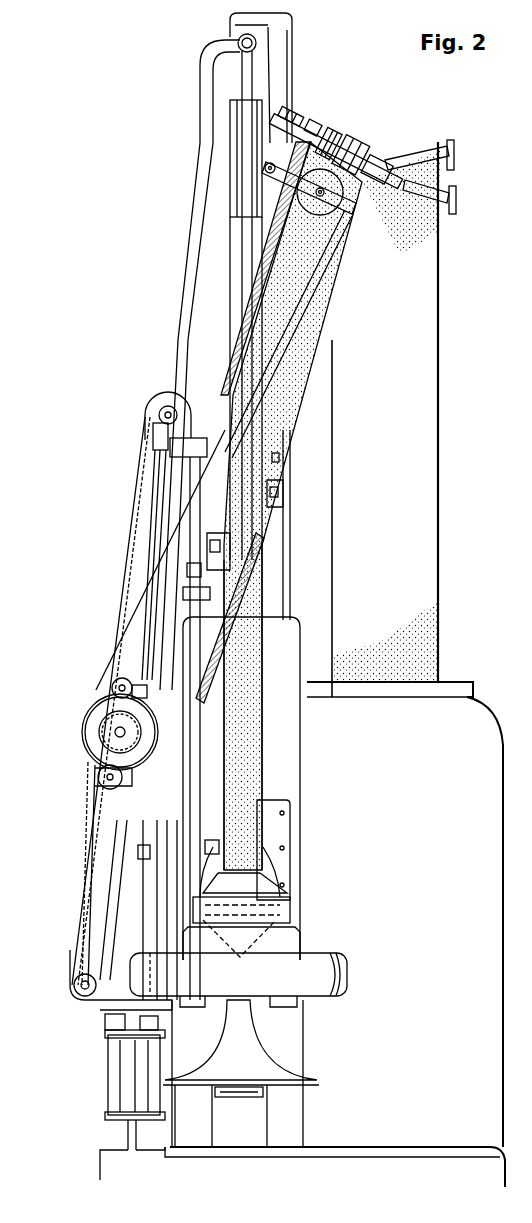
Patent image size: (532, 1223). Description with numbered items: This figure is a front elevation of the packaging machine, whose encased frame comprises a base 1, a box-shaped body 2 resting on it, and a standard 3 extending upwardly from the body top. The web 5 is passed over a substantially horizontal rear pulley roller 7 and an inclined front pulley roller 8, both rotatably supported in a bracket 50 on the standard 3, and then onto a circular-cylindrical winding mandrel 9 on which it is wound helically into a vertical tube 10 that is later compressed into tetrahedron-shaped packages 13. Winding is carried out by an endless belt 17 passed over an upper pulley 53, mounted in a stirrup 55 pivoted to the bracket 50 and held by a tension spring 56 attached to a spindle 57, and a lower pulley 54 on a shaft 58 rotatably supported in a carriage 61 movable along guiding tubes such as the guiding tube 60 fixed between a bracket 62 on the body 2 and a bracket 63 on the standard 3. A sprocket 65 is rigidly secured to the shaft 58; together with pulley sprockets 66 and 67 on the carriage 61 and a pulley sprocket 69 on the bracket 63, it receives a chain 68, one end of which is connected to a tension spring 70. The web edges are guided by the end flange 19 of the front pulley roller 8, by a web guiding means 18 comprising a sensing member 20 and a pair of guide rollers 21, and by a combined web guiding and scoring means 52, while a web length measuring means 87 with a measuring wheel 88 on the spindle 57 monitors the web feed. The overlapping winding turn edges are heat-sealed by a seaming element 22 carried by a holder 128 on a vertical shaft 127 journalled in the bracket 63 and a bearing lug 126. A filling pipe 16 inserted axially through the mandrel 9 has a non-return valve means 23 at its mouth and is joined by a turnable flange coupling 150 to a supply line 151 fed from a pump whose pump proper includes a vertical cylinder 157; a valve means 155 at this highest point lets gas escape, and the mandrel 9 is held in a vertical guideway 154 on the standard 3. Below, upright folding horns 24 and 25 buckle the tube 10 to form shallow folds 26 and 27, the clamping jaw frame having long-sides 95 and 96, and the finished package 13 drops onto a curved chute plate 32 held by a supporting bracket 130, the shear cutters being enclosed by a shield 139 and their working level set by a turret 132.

The base 1 is at (488, 1168).
The box-shaped body 2 is at (492, 742).
The standard 3 is at (282, 52).
The web 5 is at (386, 419).
The rear pulley roller 7 is at (452, 160).
The front pulley roller 8 is at (450, 197).
The winding mandrel 9 is at (236, 238).
The tube 10 is at (263, 643).
The package 13 is at (302, 920).
The filling pipe 16 is at (222, 60).
The endless belt 17 is at (298, 316).
The web guiding means 18 is at (282, 468).
The end flange 19 is at (320, 128).
The member 20 is at (289, 442).
The guide rollers 21 is at (258, 508).
The seaming element 22 is at (232, 556).
The non-return valve means 23 is at (260, 795).
The folding horn 24 is at (255, 875).
The folding horn 25 is at (267, 860).
The fold 26 is at (214, 848).
The fold 27 is at (262, 836).
The curved plate 32 is at (270, 1062).
The bracket 50 is at (299, 128).
The combined web guiding and scoring means 52 is at (316, 124).
The upper pulley 53 is at (343, 212).
The lower pulley 54 is at (100, 712).
The stirrup 55 is at (337, 207).
The tension spring 56 is at (355, 200).
The spindle 57 is at (370, 150).
The shaft 58 is at (118, 735).
The guiding tube 60 is at (160, 478).
The carriage 61 is at (152, 664).
The bracket 62 is at (106, 962).
The bracket 63 is at (165, 448).
The sprocket 65 is at (116, 732).
The pulley sprocket 66 is at (114, 680).
The pulley sprocket 67 is at (98, 779).
The chain 68 is at (122, 592).
The pulley sprocket 69 is at (168, 404).
The tension spring 70 is at (82, 1000).
The web length measuring means 87 is at (360, 142).
The measuring wheel 88 is at (326, 138).
The frame long-side 95 is at (198, 892).
The frame long-side 96 is at (282, 902).
The bearing lug 126 is at (143, 852).
The vertical shaft 127 is at (198, 522).
The holder 128 is at (188, 570).
The supporting bracket 130 is at (266, 1092).
The turret 132 is at (126, 1152).
The shield 139 is at (322, 978).
The flange coupling 150 is at (256, 40).
The supply line 151 is at (208, 92).
The vertical guideway 154 is at (236, 118).
The valve means 155 is at (238, 25).
The vertical cylinder 157 is at (130, 1080).